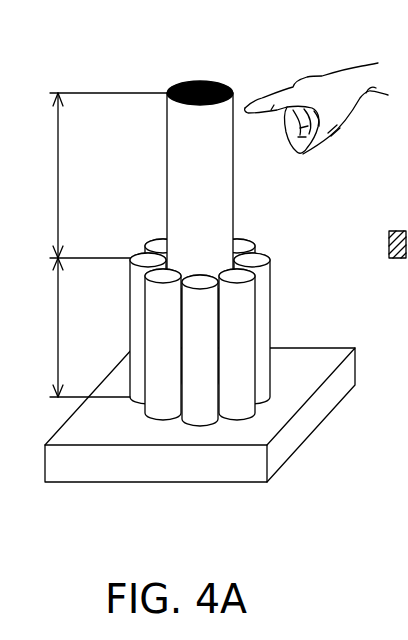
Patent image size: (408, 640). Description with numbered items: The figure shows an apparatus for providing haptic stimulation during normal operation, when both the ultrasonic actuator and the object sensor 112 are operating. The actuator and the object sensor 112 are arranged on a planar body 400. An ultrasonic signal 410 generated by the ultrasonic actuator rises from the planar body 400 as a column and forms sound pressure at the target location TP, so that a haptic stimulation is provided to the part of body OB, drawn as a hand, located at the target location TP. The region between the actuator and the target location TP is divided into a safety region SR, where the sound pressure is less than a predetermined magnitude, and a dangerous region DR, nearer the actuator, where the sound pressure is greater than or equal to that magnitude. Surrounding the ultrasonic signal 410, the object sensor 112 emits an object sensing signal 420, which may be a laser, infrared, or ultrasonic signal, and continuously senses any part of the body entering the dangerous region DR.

The planar body 400 is at (220, 470).
The ultrasonic signal 410 is at (239, 144).
The object sensing signal 420 is at (226, 396).
The object sensor 112 is at (161, 419).
The target location TP is at (195, 90).
The part of body OB is at (330, 80).
The safety region SR is at (92, 175).
The dangerous region DR is at (74, 327).